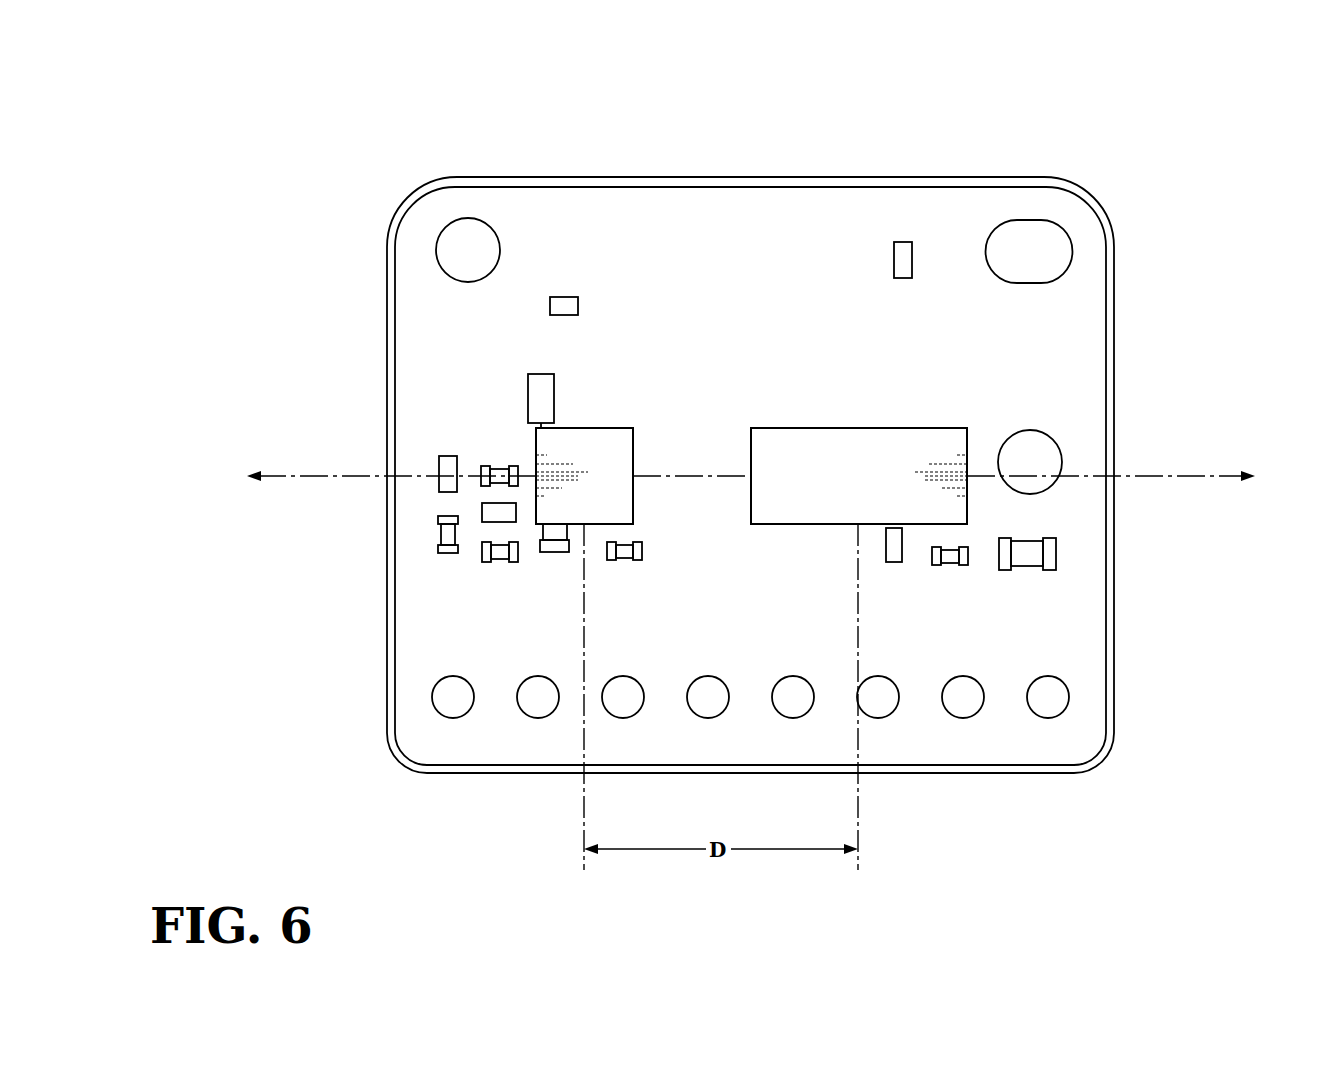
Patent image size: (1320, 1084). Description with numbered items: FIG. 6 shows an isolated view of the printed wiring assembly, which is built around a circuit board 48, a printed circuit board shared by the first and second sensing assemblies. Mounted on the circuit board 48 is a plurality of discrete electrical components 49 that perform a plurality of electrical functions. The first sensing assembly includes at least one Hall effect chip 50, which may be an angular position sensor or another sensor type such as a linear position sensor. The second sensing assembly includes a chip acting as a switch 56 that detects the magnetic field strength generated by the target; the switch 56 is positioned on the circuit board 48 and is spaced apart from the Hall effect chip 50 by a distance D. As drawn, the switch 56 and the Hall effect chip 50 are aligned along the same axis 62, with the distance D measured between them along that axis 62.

The circuit board 48 is at (336, 112).
The discrete electrical components 49 is at (414, 532).
The Hall effect chip 50 is at (898, 446).
The switch 56 is at (576, 444).
The axis 62 is at (334, 472).